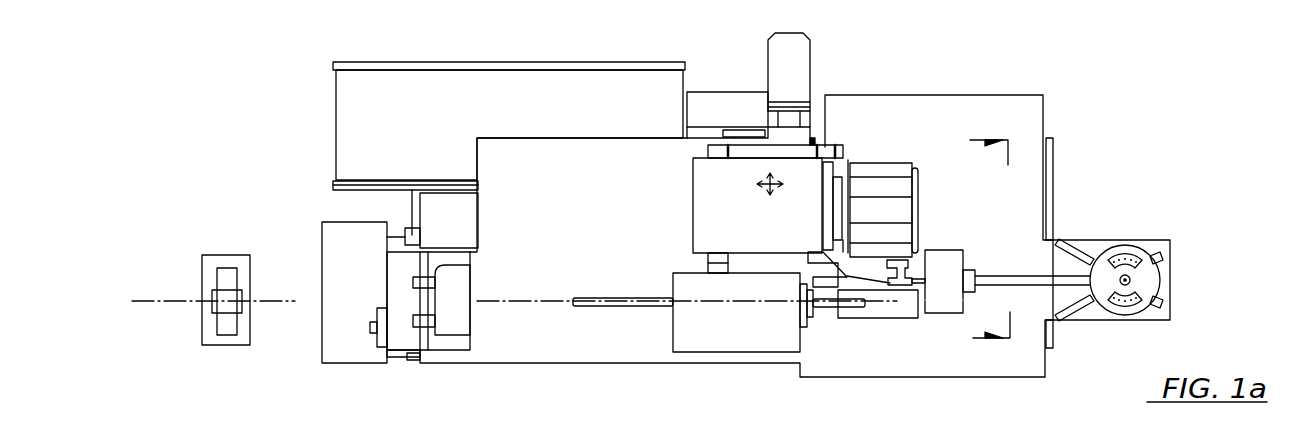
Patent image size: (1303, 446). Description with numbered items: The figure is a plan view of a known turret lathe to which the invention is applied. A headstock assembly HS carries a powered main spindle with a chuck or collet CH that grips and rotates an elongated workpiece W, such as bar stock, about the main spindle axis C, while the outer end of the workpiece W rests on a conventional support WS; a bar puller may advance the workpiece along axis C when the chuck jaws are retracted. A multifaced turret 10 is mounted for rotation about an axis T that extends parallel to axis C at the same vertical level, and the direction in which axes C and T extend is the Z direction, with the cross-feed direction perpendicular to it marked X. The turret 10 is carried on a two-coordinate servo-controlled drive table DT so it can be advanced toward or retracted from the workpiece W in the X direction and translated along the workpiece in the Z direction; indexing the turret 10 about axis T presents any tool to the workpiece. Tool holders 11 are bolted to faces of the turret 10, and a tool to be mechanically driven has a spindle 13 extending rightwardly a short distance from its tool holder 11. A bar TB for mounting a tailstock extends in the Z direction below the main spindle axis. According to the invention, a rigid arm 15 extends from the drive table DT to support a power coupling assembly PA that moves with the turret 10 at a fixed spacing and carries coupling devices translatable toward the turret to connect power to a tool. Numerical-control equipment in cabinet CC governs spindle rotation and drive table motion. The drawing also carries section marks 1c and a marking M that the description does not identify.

The cabinet CC is at (448, 110).
The turret axis T is at (1095, 212).
The X direction X is at (769, 189).
The Z direction Z is at (766, 187).
The drive table DT is at (840, 163).
The turret 10 is at (892, 170).
The section line of FIG. 1c is at (990, 244).
The tool holder 11 is at (920, 258).
The rigid arm 15 is at (808, 262).
The power coupling assembly PA is at (962, 253).
The bar TB is at (948, 307).
The spindle 13 is at (908, 317).
The headstock assembly HS is at (718, 340).
The chuck or collet CH is at (812, 323).
The workpiece W is at (603, 308).
The main spindle axis C is at (505, 304).
The support WS is at (232, 340).
The magazine chuck M is at (1130, 250).